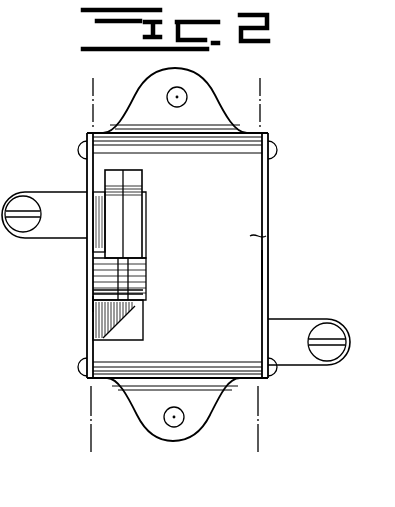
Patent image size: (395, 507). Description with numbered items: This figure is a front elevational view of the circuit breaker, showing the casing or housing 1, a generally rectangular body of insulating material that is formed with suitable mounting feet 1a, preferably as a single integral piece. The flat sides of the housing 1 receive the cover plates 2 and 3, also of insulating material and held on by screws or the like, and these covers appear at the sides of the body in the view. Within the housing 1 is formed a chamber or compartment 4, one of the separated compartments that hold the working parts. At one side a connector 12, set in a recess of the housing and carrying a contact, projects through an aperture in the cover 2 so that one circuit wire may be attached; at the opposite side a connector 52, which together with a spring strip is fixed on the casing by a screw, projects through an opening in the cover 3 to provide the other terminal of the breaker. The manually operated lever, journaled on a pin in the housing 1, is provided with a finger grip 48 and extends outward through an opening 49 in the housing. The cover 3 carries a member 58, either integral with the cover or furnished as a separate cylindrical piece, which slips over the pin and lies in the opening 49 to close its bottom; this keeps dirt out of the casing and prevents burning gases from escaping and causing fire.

The casing or housing 1 is at (266, 236).
The mounting feet 1a is at (138, 92).
The cover plate 2 is at (268, 268).
The cover plate 3 is at (84, 98).
The chamber or compartment 4 is at (268, 98).
The connector 12 is at (320, 365).
The finger grip 48 is at (143, 241).
The opening 49 is at (140, 309).
The connector 52 is at (51, 197).
The integral member 58 is at (105, 266).